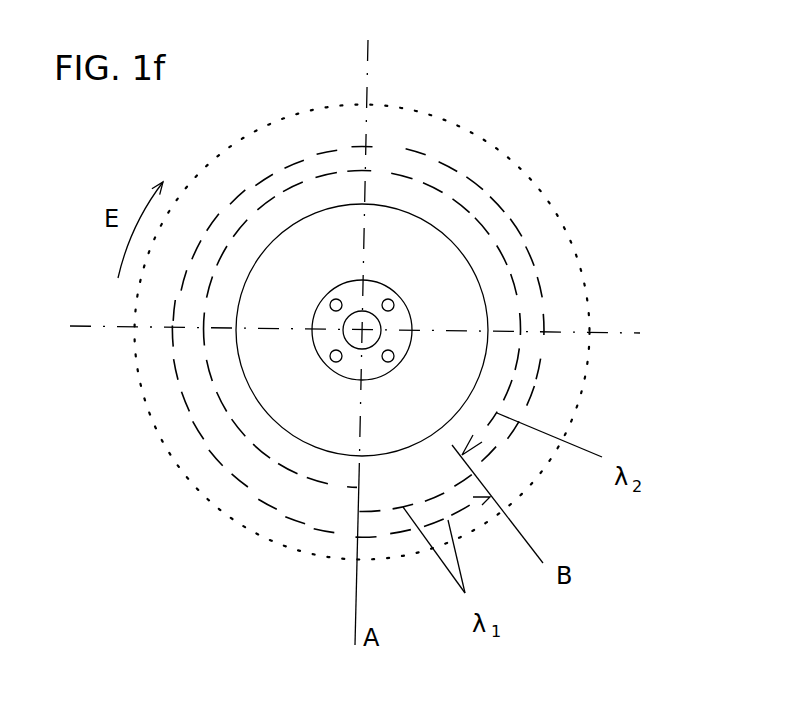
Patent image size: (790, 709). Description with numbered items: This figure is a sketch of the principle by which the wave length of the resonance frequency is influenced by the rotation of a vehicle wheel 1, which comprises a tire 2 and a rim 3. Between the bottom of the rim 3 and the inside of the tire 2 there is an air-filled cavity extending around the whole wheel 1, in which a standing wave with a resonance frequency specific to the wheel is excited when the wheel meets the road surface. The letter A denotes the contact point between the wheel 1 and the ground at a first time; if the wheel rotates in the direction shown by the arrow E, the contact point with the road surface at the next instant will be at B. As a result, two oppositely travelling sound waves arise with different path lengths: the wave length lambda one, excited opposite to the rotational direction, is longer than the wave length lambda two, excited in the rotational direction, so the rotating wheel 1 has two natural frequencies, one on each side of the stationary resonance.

The vehicle wheel 1 is at (553, 180).
The tire 2 is at (553, 248).
The rim 3 is at (455, 312).